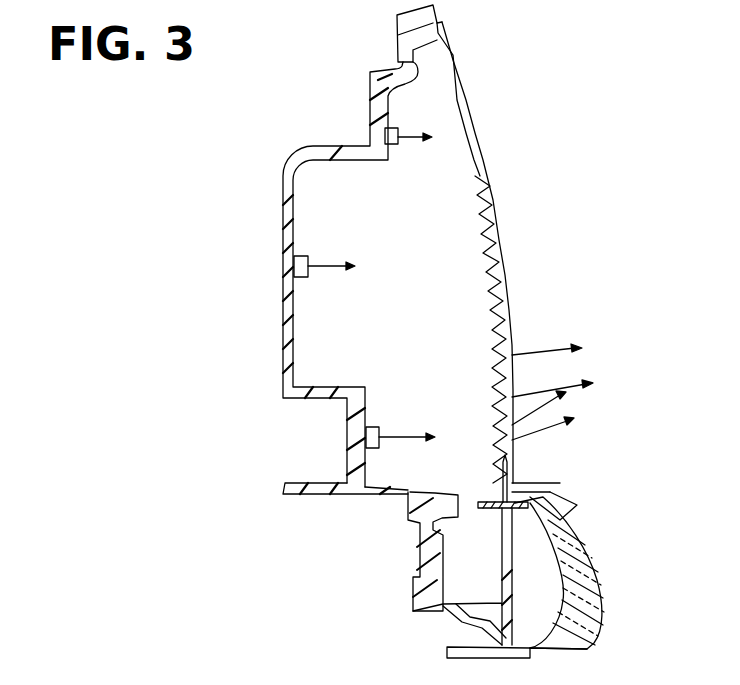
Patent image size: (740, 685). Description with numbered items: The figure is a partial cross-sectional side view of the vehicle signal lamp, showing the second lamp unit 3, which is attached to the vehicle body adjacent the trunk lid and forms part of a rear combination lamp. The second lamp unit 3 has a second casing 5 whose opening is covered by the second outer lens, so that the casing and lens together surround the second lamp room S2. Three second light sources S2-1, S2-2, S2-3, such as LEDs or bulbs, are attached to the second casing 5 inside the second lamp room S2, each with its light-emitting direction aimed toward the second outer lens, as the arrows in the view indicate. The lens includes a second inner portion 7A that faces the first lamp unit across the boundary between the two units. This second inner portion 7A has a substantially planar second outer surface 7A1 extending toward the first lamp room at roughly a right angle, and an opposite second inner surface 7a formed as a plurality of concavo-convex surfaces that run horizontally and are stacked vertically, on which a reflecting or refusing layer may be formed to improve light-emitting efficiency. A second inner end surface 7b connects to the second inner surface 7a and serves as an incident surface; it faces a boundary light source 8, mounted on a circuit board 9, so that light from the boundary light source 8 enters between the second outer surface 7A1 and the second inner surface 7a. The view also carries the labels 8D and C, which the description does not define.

The second lamp unit 3 is at (520, 189).
The second casing 5 is at (283, 312).
The second outer surface 7A1 is at (510, 273).
The second inner surface 7a is at (492, 329).
The second inner portion 7A is at (533, 487).
The second inner end surface 7b is at (537, 485).
The boundary light source 8 is at (513, 487).
The fastening pin 8D is at (500, 479).
The circuit board 9 is at (530, 505).
The second lamp room S2 is at (380, 327).
The second light source S2-1 is at (306, 258).
The second light source S2-2 is at (370, 438).
The second light source S2-3 is at (392, 128).
The airflow direction C is at (466, 387).